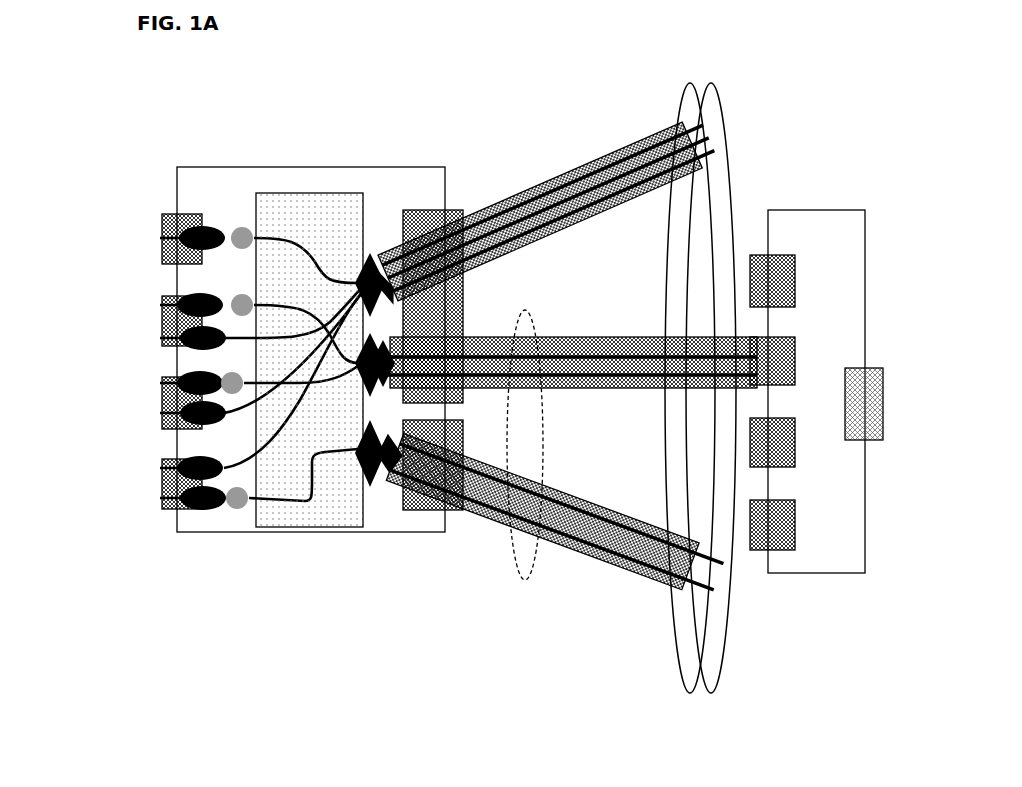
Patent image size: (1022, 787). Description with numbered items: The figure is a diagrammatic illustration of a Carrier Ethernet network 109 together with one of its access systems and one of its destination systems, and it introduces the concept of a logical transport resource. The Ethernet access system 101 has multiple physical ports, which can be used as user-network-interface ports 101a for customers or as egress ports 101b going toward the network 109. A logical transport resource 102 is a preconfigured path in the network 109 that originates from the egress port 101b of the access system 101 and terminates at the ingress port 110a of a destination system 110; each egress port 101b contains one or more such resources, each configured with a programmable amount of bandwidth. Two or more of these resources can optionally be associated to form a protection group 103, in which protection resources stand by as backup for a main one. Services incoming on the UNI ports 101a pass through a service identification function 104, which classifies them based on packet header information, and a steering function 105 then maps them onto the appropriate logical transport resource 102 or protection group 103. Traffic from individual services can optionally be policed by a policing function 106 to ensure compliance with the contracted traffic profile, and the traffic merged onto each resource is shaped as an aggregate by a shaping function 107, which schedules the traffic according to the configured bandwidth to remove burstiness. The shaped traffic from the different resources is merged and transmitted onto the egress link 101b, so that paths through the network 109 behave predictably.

The Ethernet access system 101 is at (295, 167).
The user-network-interface ports 101a is at (165, 258).
The egress port 101b is at (450, 213).
The logical transport resource 102 is at (605, 507).
The protection group 103 is at (516, 570).
The service identification function 104 is at (193, 513).
The steering function 105 is at (295, 520).
The policing function 106 is at (243, 510).
The shaping function 107 is at (384, 212).
The network 109 is at (720, 660).
The destination system 110 is at (833, 578).
The ingress port 110a is at (768, 268).